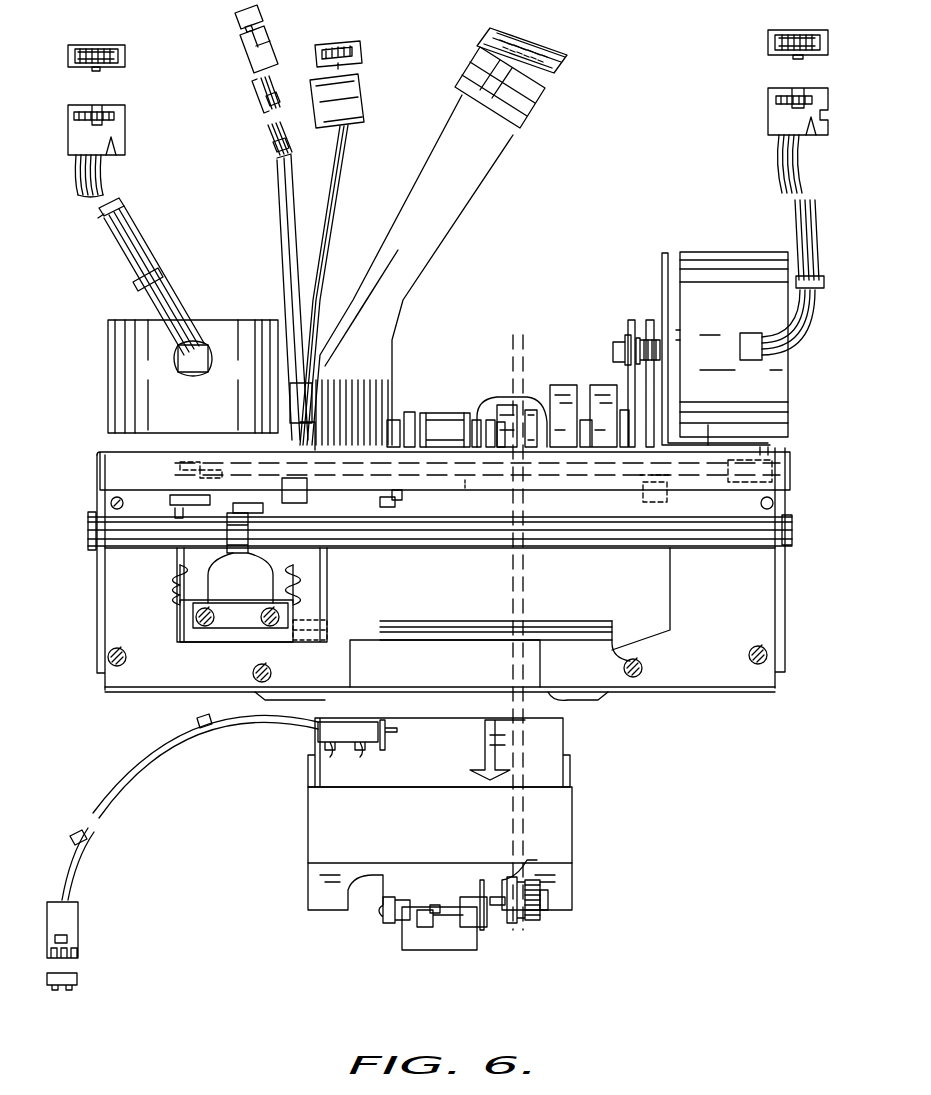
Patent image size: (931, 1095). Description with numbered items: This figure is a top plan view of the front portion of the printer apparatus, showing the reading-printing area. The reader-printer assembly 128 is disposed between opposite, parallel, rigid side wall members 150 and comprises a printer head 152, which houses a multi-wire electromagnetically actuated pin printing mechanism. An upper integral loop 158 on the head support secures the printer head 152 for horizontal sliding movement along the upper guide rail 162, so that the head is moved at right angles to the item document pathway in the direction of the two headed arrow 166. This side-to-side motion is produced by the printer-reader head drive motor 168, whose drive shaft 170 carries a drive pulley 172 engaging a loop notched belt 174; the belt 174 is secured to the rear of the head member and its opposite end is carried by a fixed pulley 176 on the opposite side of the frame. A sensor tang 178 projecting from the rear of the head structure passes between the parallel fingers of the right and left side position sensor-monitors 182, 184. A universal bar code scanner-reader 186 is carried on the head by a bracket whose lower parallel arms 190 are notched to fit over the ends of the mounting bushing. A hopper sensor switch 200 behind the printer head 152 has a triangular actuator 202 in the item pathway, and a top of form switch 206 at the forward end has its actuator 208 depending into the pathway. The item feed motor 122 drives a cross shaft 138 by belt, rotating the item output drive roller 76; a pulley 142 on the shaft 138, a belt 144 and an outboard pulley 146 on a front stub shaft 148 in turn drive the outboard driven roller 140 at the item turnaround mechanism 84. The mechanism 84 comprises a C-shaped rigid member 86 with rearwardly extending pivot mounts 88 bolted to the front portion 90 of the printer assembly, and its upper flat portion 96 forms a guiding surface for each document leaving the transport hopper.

The item output drive roller 76 is at (448, 418).
The item turnaround mechanism 84 is at (488, 946).
The C-shaped rigid member 86 is at (390, 920).
The pivot mounts 88 is at (308, 808).
The front portion of the printer assembly 90 is at (268, 708).
The upper flat portion 96 is at (440, 848).
The item feed motor 122 is at (725, 348).
The reader-printer assembly 128 is at (170, 585).
The cross shaft 138 is at (497, 408).
The outboard driven roller 140 is at (425, 937).
The pulley 142 is at (534, 408).
The belt 144 is at (524, 597).
The outboard pulley 146 is at (528, 925).
The front stub shaft 148 is at (546, 894).
The side wall members 150 is at (95, 604).
The printer head 152 is at (240, 590).
The upper integral loop 158 is at (230, 530).
The upper guide rail 162 is at (700, 541).
The two headed arrow 166 is at (380, 568).
The printer-reader head drive motor 168 is at (193, 376).
The drive shaft 170 is at (188, 462).
The drive pulley 172 is at (198, 468).
The loop notched belt 174 is at (474, 480).
The fixed pulley 176 is at (784, 447).
The sensor tang 178 is at (212, 494).
The right side position sensor-monitor 182 is at (667, 487).
The left side position sensor-monitor 184 is at (250, 530).
The universal bar code scanner-reader 186 is at (252, 611).
The parallel arms 190 is at (182, 607).
The hopper sensor switch 200 is at (389, 495).
The actuator 202 is at (405, 479).
The top of form switch 206 is at (338, 758).
The actuator 208 is at (388, 738).